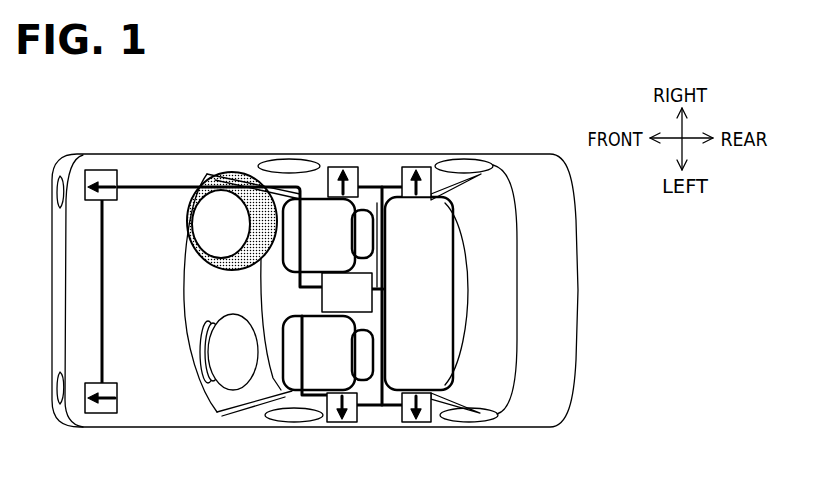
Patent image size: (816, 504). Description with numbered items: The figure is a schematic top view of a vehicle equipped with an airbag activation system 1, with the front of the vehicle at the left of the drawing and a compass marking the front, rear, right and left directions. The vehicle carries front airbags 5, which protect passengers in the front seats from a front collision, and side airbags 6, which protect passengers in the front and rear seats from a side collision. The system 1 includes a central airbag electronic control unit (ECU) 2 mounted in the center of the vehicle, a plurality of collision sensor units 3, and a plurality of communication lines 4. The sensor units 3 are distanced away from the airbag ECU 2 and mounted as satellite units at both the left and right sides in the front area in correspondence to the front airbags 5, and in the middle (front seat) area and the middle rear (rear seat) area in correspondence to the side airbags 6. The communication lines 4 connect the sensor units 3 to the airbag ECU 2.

The airbag activation system 1 is at (550, 83).
The airbag electronic control unit (ECU) 2 is at (322, 285).
The collision sensor unit 3 is at (100, 170).
The communication line 4 is at (166, 187).
The front airbag 5 is at (233, 353).
The side airbag 6 is at (287, 159).